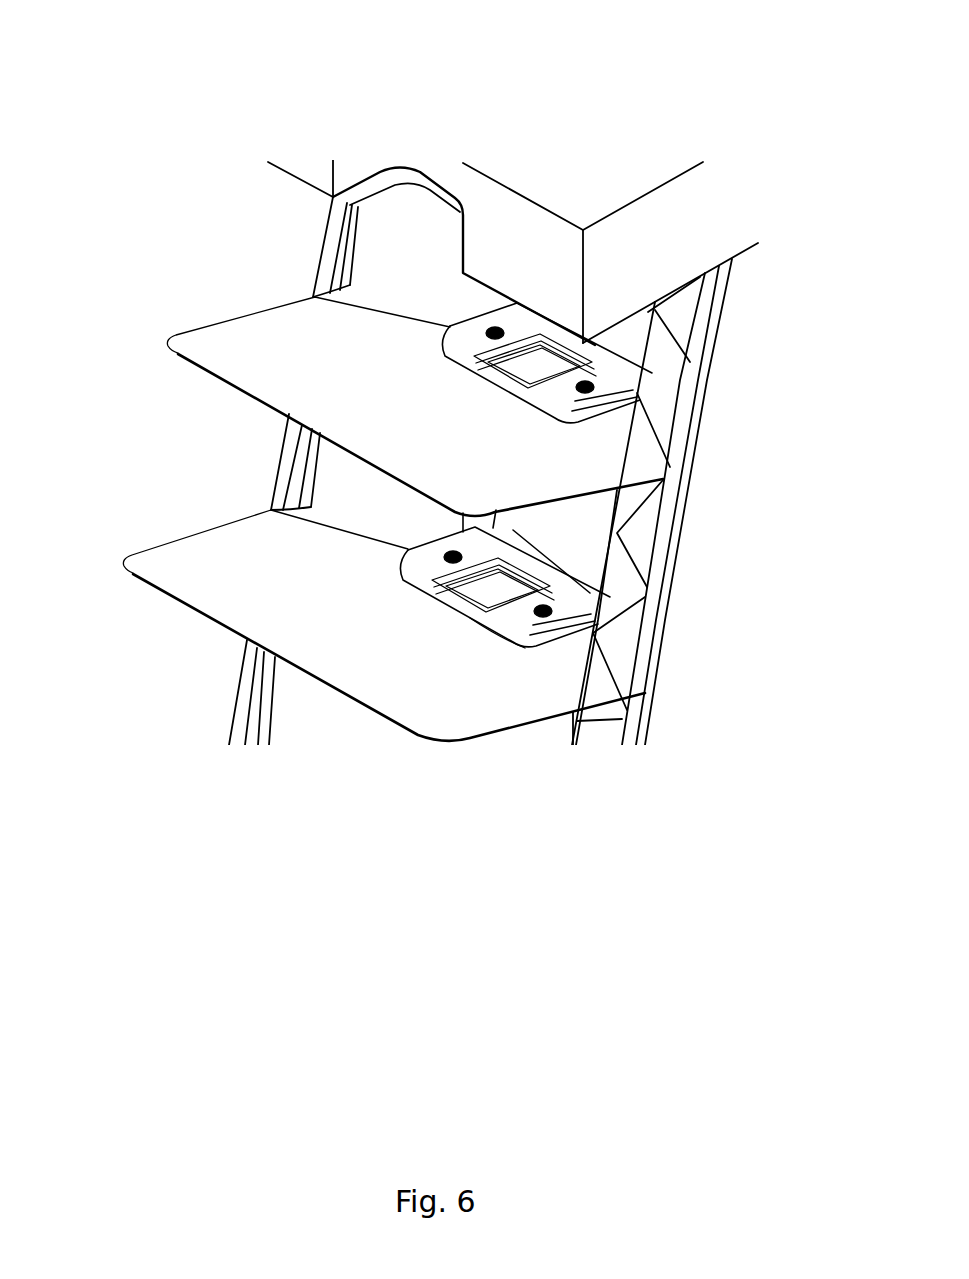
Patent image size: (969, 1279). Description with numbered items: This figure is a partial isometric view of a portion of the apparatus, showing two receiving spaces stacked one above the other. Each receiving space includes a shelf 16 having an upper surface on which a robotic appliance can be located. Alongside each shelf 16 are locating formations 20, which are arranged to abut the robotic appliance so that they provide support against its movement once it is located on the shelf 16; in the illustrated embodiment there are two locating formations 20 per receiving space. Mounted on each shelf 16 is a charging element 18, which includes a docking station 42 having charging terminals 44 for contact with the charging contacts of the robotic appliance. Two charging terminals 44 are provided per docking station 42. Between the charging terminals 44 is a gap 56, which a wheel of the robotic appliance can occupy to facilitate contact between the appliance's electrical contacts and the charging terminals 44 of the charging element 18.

The shelf 16 is at (610, 468).
The charging element 18 is at (455, 331).
The locating formation 20 is at (418, 247).
The docking station 42 is at (473, 353).
The charging terminal 44 is at (587, 385).
The gap 56 is at (481, 600).